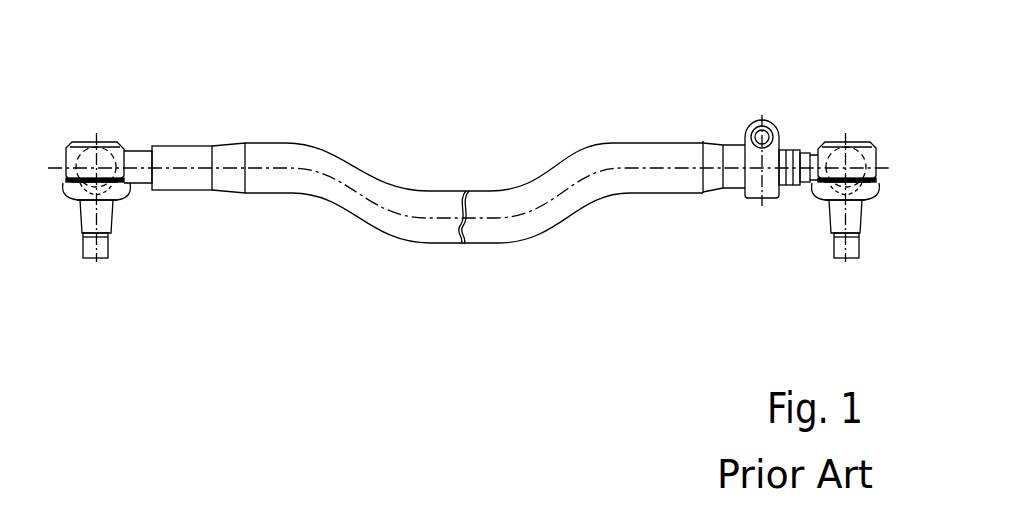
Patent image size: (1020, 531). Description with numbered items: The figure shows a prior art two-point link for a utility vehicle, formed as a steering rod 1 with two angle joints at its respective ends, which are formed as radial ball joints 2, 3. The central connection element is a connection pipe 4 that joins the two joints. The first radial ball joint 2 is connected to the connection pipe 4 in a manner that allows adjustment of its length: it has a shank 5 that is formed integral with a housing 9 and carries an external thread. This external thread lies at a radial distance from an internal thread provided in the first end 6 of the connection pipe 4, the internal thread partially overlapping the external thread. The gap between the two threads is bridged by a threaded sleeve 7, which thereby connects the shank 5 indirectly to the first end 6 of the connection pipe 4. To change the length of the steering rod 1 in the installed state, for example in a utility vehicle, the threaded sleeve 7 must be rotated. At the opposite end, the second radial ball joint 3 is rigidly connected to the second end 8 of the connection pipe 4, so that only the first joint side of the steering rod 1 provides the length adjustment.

The steering rod 1 is at (433, 139).
The first radial ball joint 2 is at (828, 210).
The second radial ball joint 3 is at (94, 136).
The connection pipe 4 is at (384, 245).
The shank 5 is at (805, 155).
The first end of the connection pipe 6 is at (736, 197).
The threaded sleeve 7 is at (794, 138).
The second end of the connection pipe 8 is at (178, 196).
The housing 9 is at (886, 157).